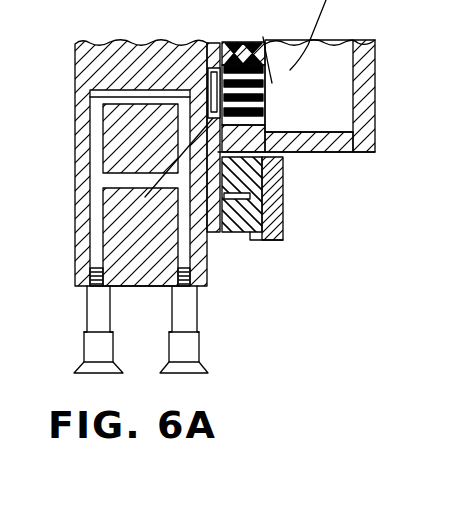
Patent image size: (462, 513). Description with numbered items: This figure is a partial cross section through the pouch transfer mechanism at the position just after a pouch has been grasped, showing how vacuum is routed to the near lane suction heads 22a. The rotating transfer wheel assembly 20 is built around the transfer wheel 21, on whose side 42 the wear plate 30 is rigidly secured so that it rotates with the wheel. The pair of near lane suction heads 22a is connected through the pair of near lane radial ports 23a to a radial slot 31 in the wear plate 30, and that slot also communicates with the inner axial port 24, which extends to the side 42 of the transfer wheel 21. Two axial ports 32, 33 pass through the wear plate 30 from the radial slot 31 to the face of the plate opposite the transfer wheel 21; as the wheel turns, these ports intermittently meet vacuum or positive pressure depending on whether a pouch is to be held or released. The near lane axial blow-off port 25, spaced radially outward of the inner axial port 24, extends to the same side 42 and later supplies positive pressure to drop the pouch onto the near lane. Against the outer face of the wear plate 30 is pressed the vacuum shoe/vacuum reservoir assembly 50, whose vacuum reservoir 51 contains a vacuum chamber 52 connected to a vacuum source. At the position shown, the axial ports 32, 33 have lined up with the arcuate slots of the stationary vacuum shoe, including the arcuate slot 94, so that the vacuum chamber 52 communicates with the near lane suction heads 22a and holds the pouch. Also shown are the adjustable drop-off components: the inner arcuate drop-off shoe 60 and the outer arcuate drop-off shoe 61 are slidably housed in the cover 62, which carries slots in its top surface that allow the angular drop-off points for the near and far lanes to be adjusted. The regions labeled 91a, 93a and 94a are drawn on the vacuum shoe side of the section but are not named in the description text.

The transfer wheel assembly 20 is at (66, 279).
The transfer wheel 21 is at (140, 273).
The near lane suction heads 22a is at (68, 362).
The near lane radial ports 23a is at (182, 230).
The inner axial port 24 is at (110, 98).
The near lane axial blow-off port 25 is at (120, 180).
The wear plate 30 is at (213, 235).
The radial slot 31 is at (212, 70).
The axial port 32 is at (250, 0).
The axial port 33 is at (169, 169).
The side of the transfer wheel 42 is at (208, 280).
The vacuum shoe/vacuum reservoir assembly 50 is at (325, 87).
The vacuum reservoir 51 is at (372, 68).
The vacuum chamber 52 is at (345, 45).
The inner arcuate drop-off shoe 60 is at (262, 180).
The outer arcuate drop-off shoe 61 is at (283, 228).
The cover 62 is at (283, 242).
The cap 91a is at (255, 55).
The cavity 93a is at (272, 83).
The arcuate slot 94 is at (290, 150).
The lower hatched part 94a is at (265, 118).